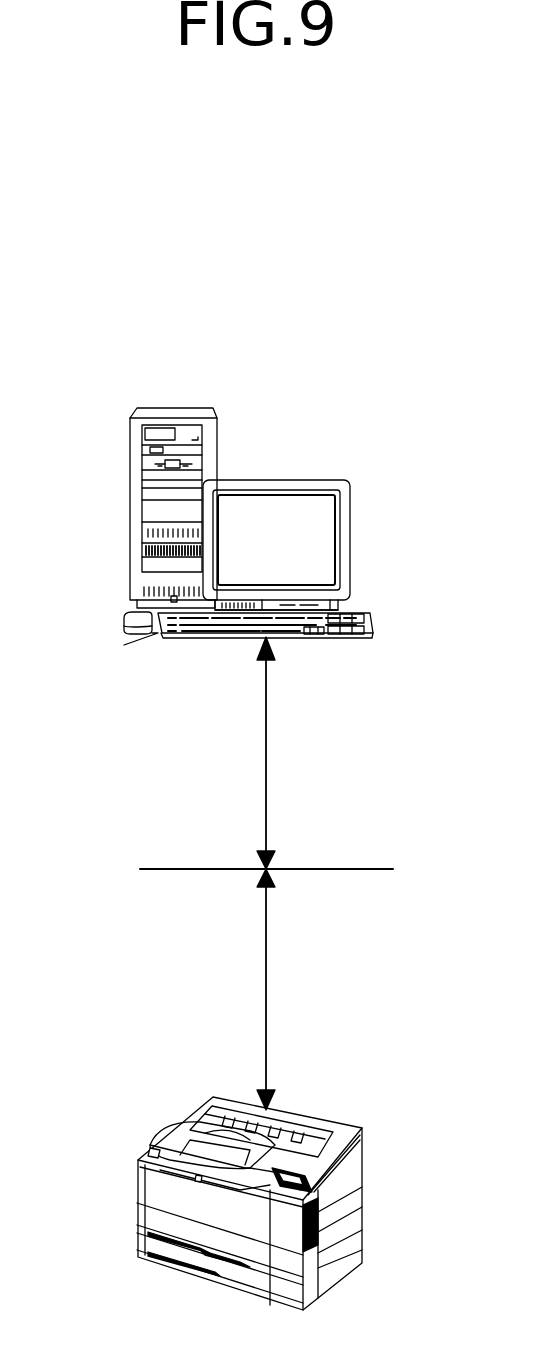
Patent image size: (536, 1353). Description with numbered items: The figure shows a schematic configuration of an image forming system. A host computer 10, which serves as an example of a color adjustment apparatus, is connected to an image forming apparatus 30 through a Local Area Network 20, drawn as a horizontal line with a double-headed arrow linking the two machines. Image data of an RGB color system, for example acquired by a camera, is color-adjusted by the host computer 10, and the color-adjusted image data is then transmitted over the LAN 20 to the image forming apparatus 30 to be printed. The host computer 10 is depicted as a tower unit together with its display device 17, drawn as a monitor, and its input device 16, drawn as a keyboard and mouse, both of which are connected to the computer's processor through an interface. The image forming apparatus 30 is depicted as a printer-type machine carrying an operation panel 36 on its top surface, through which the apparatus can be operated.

The host computer 10 is at (134, 399).
The display device 17 is at (350, 482).
The input device 16 is at (157, 636).
The Local Area Network (LAN) 20 is at (328, 868).
The image forming apparatus 30 is at (355, 1127).
The operation panel 36 is at (300, 1168).